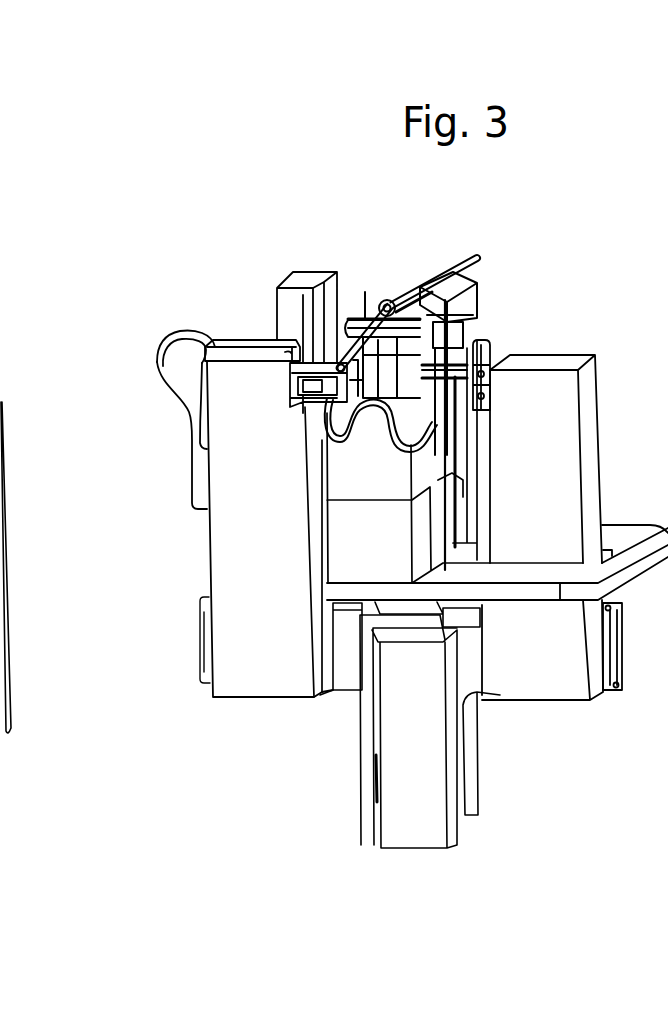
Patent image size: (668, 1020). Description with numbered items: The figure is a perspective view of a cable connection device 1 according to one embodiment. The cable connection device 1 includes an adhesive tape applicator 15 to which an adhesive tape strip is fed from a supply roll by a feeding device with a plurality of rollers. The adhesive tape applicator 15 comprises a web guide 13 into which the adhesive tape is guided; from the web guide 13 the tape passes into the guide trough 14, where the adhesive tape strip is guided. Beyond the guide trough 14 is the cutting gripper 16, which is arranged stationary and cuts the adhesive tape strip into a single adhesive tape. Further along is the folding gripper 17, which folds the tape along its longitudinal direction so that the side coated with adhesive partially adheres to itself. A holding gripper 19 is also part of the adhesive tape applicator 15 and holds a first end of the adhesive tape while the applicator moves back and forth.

The cable connection device 1 is at (168, 160).
The web guide 13 is at (163, 357).
The guide trough 14 is at (240, 337).
The adhesive tape applicator 15 is at (543, 297).
The cutting gripper 16 is at (287, 290).
The folding gripper 17 is at (335, 348).
The holding gripper 19 is at (487, 345).